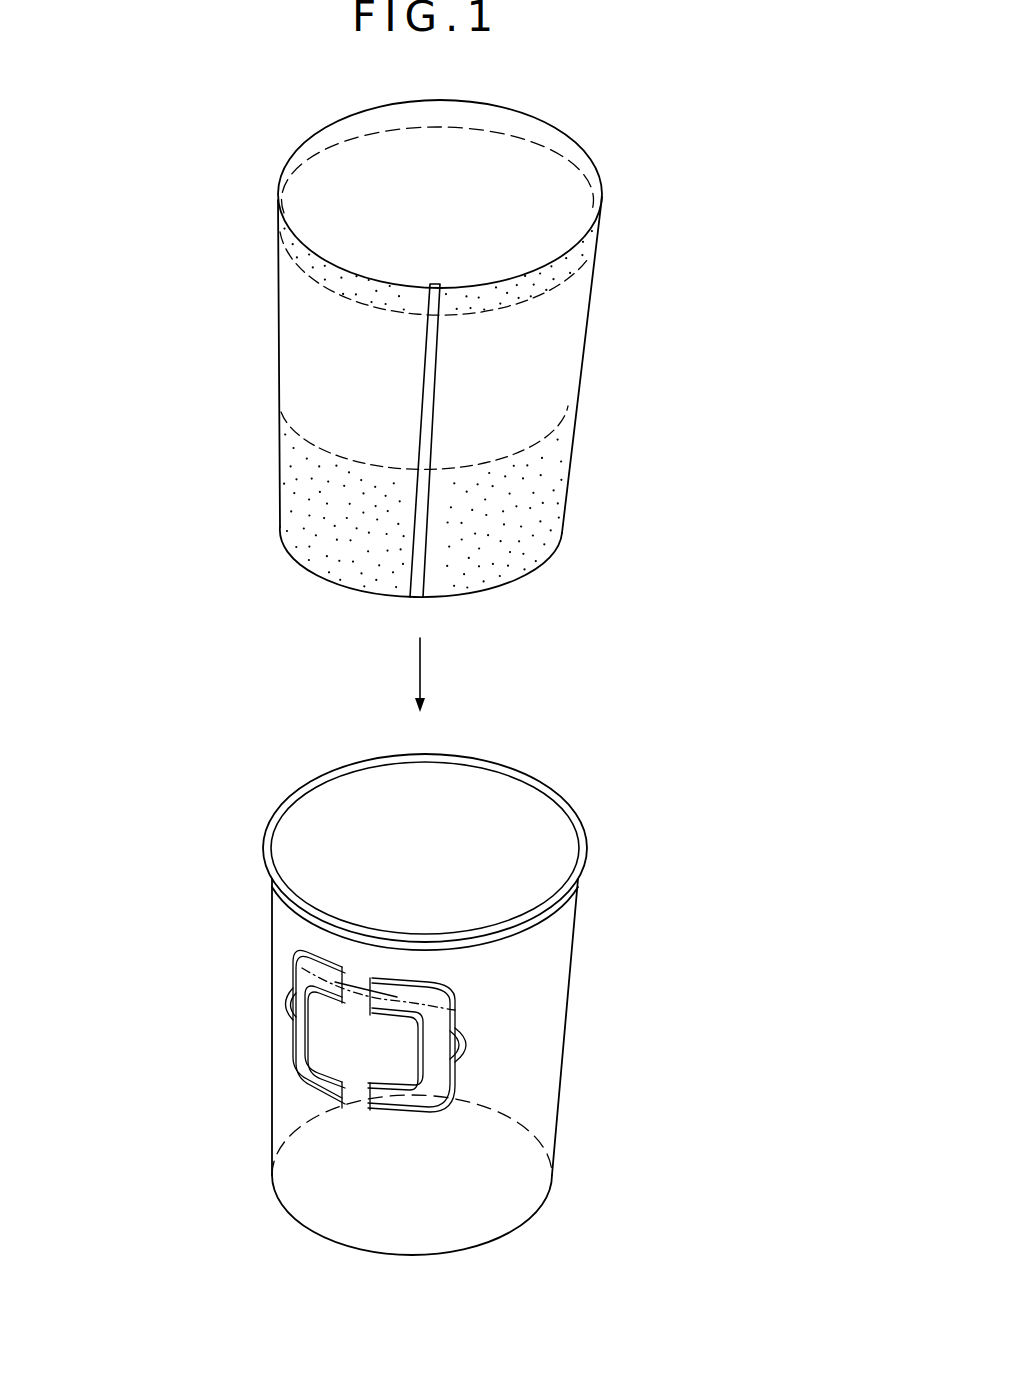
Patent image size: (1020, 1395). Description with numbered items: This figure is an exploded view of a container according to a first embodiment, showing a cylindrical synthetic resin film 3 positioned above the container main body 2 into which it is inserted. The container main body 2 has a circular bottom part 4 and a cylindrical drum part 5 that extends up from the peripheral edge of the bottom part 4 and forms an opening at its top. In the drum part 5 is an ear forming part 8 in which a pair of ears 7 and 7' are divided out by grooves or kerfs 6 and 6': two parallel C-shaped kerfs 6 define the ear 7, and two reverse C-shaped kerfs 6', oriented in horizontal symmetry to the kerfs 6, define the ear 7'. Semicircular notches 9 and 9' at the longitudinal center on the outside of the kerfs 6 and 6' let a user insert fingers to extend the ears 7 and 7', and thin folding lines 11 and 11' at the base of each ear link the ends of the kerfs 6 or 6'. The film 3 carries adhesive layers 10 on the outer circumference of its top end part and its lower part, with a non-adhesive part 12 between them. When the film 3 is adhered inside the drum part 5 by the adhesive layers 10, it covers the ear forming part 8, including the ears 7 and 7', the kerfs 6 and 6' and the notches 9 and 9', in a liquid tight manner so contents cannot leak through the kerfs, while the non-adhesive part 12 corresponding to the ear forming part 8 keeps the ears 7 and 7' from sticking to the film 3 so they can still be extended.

The container main body 2 is at (526, 760).
The synthetic resin film 3 is at (572, 122).
The bottom part 4 is at (500, 1203).
The drum part 5 is at (578, 945).
The kerfs 6 is at (257, 1073).
The kerfs 6' is at (513, 1148).
The ear 7 is at (257, 1027).
The ear 7' is at (502, 1086).
The ear forming part 8 is at (408, 1101).
The notch 9 is at (233, 1014).
The notch 9' is at (550, 1058).
The adhesive layers 10 is at (560, 275).
The folding line 11 is at (250, 1087).
The folding line 11' is at (429, 1101).
The non-adhesive part 12 is at (555, 368).